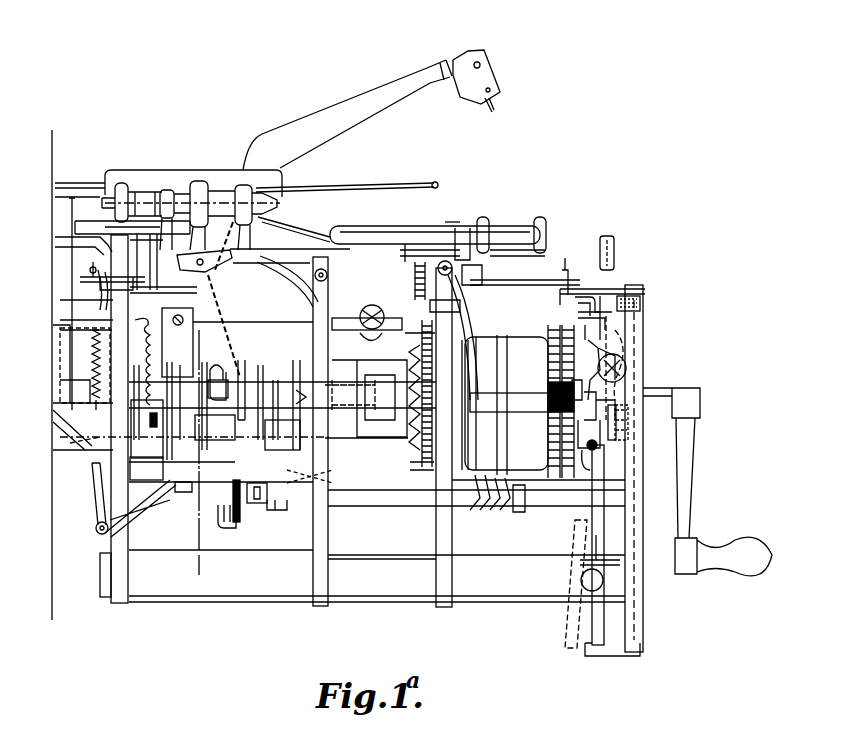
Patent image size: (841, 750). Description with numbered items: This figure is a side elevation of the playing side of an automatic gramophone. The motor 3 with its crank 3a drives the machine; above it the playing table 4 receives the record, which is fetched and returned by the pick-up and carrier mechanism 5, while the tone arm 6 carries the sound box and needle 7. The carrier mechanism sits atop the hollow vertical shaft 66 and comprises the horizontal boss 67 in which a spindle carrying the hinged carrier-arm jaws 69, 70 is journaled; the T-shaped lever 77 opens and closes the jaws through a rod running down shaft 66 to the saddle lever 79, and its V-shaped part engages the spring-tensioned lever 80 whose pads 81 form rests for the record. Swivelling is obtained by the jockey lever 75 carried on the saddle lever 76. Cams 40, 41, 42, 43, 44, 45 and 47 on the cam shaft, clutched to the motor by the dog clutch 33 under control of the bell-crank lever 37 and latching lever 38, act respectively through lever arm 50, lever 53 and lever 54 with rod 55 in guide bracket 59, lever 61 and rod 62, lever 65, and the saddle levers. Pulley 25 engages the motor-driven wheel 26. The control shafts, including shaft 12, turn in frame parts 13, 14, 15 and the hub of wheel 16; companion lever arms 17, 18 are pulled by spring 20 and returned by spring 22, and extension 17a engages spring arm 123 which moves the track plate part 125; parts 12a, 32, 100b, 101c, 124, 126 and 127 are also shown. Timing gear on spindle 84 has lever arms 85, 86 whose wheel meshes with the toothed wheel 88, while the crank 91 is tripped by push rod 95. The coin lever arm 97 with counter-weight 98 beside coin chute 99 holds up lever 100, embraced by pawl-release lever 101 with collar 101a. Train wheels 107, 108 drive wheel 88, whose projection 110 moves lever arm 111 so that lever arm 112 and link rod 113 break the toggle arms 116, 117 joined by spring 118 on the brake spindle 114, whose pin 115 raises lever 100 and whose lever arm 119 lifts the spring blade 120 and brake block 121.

The motor 3 is at (517, 352).
The crank handle 3a is at (691, 472).
The playing table 4 is at (452, 222).
The pick-up and carrier mechanism 5 is at (232, 180).
The tone arm 6 is at (352, 100).
The sound box and needle 7 is at (488, 78).
The selector-disc controlling shaft 12 is at (305, 392).
The cross bar 12a is at (545, 403).
The machine frame part 13 is at (118, 580).
The machine frame part 14 is at (320, 585).
The machine frame part 15 is at (444, 585).
The wheel 16 is at (630, 422).
The companion lever arm 17 is at (58, 370).
The lateral extension 17a is at (55, 327).
The companion lever arm 18 is at (92, 449).
The spring 20 is at (88, 358).
The spring 22 is at (92, 372).
The pulley 25 is at (411, 456).
The motor-driven wheel 26 is at (422, 470).
The link 32 is at (330, 398).
The dog clutch (cam clutch) 33 is at (362, 360).
The bell-crank lever 37 is at (276, 380).
The latching lever 38 is at (216, 370).
The cam 40 is at (296, 362).
The cam 41 is at (260, 368).
The cam 42 is at (242, 362).
The cam 43 is at (205, 364).
The cam 44 is at (185, 362).
The cam 45 is at (169, 364).
The cam 47 is at (138, 362).
The lever arm 50 is at (295, 428).
The lever 53 is at (258, 504).
The lever 54 is at (162, 505).
The rod 55 is at (95, 292).
The guide bracket 59 is at (82, 277).
The lever 61 is at (245, 488).
The rod 62 is at (232, 324).
The lever 65 is at (200, 433).
The hollow vertical shaft 66 is at (200, 291).
The horizontal boss 67 is at (143, 191).
The carrier-arm jaw 69 is at (300, 185).
The carrier-arm jaw 70 is at (290, 229).
The jockey lever 75 is at (155, 452).
The saddle lever 76 is at (142, 412).
The T-shaped lever 77 is at (215, 270).
The saddle lever 79 is at (186, 490).
The spring-tensioned lever 80 is at (363, 240).
The rubber pads 81 is at (536, 238).
The spindle 84 is at (400, 507).
The lever arm 85 is at (283, 511).
The lever arm 86 is at (528, 513).
The toothed wheel 88 is at (550, 346).
The crank 91 is at (573, 448).
The push rod 95 is at (604, 489).
The lever arm 97 is at (576, 314).
The counter-weight 98 is at (597, 349).
The coin chute 99 is at (607, 236).
The lever 100 is at (580, 304).
The top rail 100b is at (642, 286).
The pawl-release lever 101 is at (612, 345).
The collar-like portion 101a is at (618, 366).
The box 101c is at (608, 282).
The train wheel 107 is at (552, 361).
The train wheel 108 is at (553, 416).
The lateral projection 110 is at (582, 392).
The lever arm 111 is at (576, 380).
The lever arm 112 is at (466, 366).
The link rod 113 is at (447, 250).
The motor brake spindle 114 is at (512, 286).
The pin 115 is at (565, 268).
The toggle lever arm 116 is at (414, 282).
The toggle lever arm 117 is at (452, 308).
The spring 118 is at (412, 289).
The lever arm 119 is at (478, 277).
The spring blade 120 is at (465, 240).
The brake block 121 is at (481, 238).
The spring arm 123 is at (62, 254).
The cam 124 is at (160, 169).
The track plate part 125 is at (168, 189).
The flange 126 is at (120, 183).
The bolt 127 is at (104, 197).